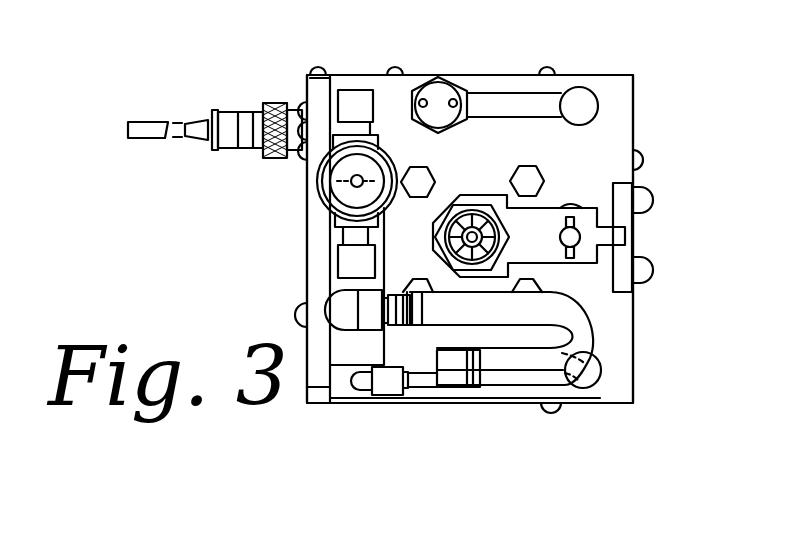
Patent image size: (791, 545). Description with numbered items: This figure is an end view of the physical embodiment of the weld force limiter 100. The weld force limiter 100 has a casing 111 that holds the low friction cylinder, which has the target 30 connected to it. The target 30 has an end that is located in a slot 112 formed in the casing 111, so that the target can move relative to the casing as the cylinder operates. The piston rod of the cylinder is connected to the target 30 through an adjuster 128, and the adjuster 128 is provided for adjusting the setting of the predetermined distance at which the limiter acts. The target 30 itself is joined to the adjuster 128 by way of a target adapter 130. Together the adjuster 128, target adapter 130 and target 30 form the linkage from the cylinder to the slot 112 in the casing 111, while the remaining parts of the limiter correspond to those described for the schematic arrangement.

The weld force limiter 100 is at (662, 157).
The casing 111 is at (633, 100).
The slot 112 is at (630, 233).
The adjuster 128 is at (470, 203).
The target 30 is at (571, 206).
The target adapter 130 is at (548, 263).